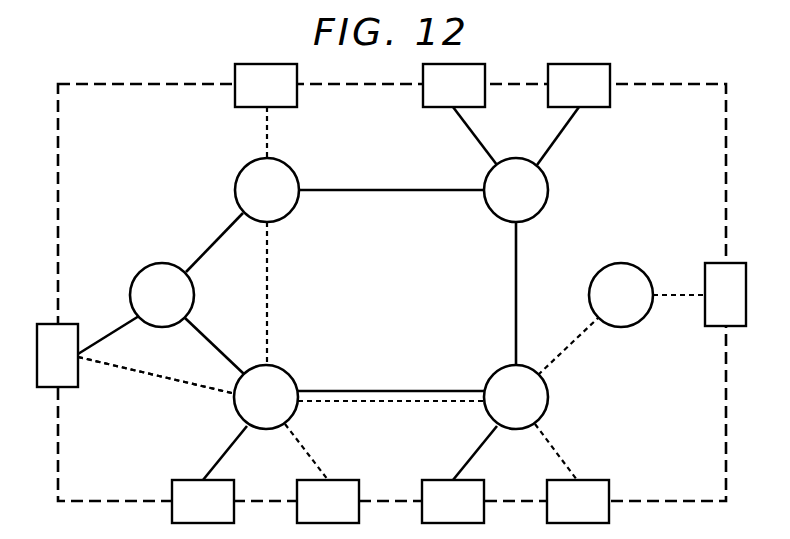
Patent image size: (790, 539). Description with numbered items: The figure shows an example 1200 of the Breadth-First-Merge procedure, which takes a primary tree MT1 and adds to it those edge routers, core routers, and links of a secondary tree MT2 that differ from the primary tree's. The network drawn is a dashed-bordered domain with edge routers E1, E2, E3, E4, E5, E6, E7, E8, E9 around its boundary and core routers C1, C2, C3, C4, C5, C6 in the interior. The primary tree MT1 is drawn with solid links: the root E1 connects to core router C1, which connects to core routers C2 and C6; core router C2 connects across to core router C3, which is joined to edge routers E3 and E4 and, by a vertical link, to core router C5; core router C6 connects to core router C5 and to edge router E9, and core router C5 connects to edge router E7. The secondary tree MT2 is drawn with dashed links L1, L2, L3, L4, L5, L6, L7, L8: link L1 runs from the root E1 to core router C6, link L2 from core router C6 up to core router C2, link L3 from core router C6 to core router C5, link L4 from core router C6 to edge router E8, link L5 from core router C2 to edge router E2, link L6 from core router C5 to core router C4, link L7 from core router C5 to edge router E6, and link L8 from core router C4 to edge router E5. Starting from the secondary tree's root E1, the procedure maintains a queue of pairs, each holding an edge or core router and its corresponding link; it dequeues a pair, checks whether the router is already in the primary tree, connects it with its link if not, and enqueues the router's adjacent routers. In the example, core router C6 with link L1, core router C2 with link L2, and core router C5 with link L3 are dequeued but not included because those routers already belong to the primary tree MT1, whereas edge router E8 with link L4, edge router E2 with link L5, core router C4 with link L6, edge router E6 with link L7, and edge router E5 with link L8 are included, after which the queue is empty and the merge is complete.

The example of the Breadth-first-merge procedure 1200 is at (75, 62).
The secondary tree's root E1 is at (57, 355).
The edge router E2 is at (266, 85).
The edge router E3 is at (454, 85).
The edge router E4 is at (579, 85).
The edge router E5 is at (725, 294).
The edge router E6 is at (578, 501).
The edge router E7 is at (453, 501).
The edge router E8 is at (328, 501).
The edge router E9 is at (203, 501).
The core router C1 is at (162, 295).
The core router C2 is at (267, 190).
The core router C3 is at (516, 190).
The core router C4 is at (621, 295).
The core router C5 is at (516, 397).
The core router C6 is at (266, 397).
The link L1 is at (157, 371).
The link L2 is at (281, 293).
The link L3 is at (391, 419).
The link L4 is at (308, 450).
The link L5 is at (282, 132).
The link L6 is at (568, 339).
The link L7 is at (558, 451).
The link L8 is at (679, 312).
The primary tree MT1 is at (216, 240).
The secondary tree MT2 is at (158, 376).